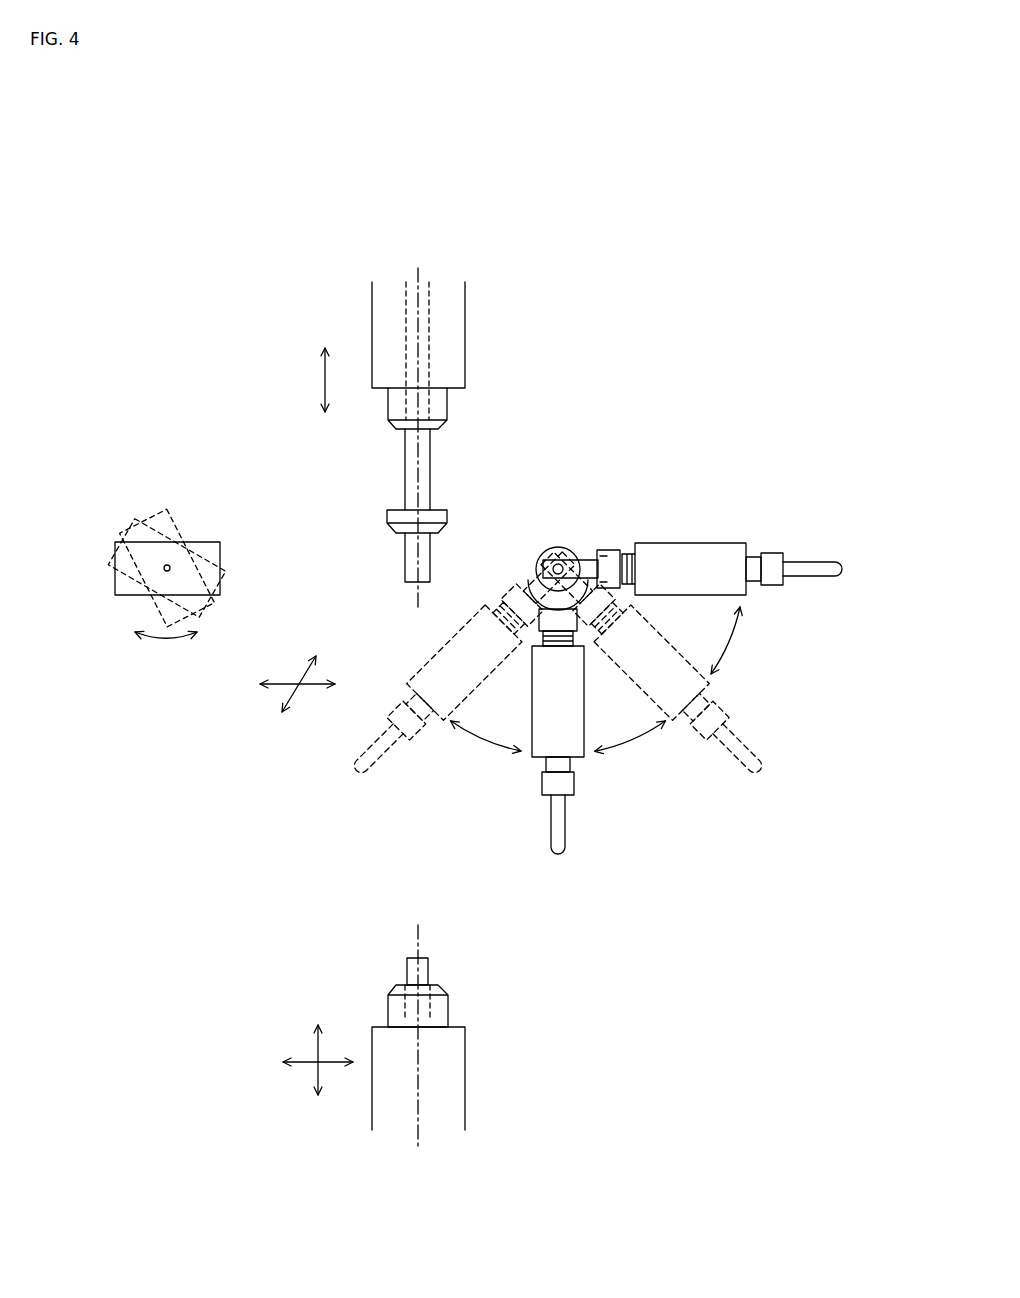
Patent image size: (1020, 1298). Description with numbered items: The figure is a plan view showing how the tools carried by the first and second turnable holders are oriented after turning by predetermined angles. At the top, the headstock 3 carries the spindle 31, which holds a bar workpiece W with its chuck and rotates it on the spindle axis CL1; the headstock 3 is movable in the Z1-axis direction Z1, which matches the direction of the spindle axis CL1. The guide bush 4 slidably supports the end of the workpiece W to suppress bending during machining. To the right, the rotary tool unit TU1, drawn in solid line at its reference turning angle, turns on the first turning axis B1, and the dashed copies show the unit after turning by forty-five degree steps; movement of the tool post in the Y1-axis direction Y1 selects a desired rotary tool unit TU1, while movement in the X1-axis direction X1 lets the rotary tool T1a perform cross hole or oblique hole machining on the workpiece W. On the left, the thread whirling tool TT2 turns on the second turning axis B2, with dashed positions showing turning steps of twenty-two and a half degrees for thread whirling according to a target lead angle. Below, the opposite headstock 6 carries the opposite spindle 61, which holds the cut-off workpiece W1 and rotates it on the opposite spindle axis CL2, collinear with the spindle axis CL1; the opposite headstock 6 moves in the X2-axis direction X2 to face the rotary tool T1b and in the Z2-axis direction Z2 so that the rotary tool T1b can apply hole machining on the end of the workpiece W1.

The spindle axis CL1 is at (418, 270).
The headstock 3 is at (465, 356).
The spindle 31 is at (447, 411).
The guide bush 4 is at (447, 516).
The workpiece W is at (404, 557).
The Z1-axis direction Z1 is at (325, 392).
The thread whirling tool TT2 is at (218, 542).
The second turning axis B2 is at (168, 568).
The X1-axis direction X1 is at (312, 685).
The Y1-axis direction Y1 is at (290, 698).
The first turning axis B1 is at (558, 547).
The rotary tool T1a is at (588, 562).
The rotary tool unit TU1 is at (738, 543).
The rotary tool T1b is at (818, 563).
The opposite spindle axis CL2 is at (420, 1130).
The cut-off workpiece W1 is at (407, 970).
The opposite spindle 61 is at (448, 1010).
The opposite headstock 6 is at (465, 1062).
The Z2-axis direction Z2 is at (318, 1050).
The X2-axis direction X2 is at (304, 1063).